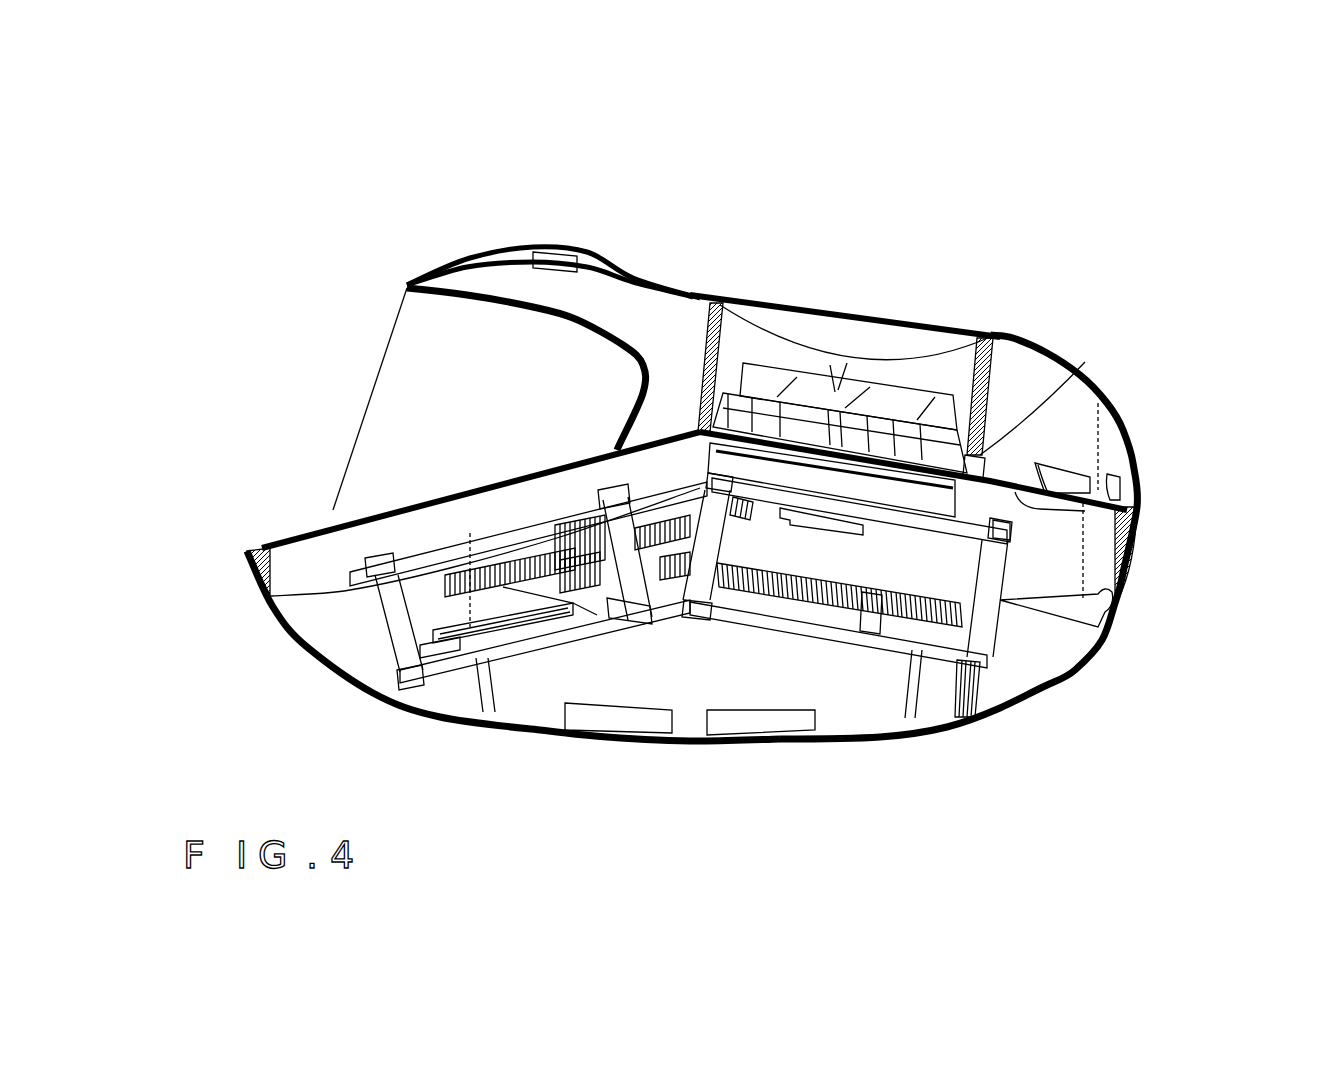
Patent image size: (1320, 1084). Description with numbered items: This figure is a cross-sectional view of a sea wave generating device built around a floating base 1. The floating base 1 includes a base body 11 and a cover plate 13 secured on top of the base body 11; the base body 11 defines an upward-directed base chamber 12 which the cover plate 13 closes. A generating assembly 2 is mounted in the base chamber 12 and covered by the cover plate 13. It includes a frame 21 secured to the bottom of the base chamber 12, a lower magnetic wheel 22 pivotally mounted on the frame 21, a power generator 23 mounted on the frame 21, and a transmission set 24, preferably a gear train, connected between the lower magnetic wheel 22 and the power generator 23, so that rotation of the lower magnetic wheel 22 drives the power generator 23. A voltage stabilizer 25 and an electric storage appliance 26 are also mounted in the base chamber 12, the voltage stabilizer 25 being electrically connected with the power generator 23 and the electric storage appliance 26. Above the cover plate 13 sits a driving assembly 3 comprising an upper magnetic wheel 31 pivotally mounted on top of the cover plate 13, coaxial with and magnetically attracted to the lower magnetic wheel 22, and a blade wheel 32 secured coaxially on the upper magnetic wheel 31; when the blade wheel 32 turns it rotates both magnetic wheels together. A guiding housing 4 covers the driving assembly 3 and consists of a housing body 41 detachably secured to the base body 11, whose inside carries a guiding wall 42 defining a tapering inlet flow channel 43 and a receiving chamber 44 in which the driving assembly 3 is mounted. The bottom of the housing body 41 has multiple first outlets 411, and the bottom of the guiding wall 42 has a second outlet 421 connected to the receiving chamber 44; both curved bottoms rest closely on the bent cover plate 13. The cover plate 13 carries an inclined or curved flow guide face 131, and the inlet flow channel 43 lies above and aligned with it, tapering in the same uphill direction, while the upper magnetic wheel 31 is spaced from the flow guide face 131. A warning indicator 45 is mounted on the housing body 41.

The floating base 1 is at (1108, 776).
The base body 11 is at (1032, 700).
The base chamber 12 is at (1050, 650).
The cover plate 13 is at (1133, 507).
The flow guide face 131 is at (340, 520).
The generating assembly 2 is at (1215, 676).
The frame 21 is at (1000, 537).
The lower magnetic wheel 22 is at (980, 600).
The power generator 23 is at (387, 620).
The transmission set 24 is at (872, 600).
The voltage stabilizer 25 is at (620, 727).
The electric storage appliance 26 is at (767, 728).
The driving assembly 3 is at (1010, 252).
The upper magnetic wheel 31 is at (933, 443).
The blade wheel 32 is at (903, 393).
The guiding housing 4 is at (848, 197).
The housing body 41 is at (833, 315).
The first outlets 411 is at (1122, 487).
The guiding wall 42 is at (718, 305).
The second outlet 421 is at (978, 457).
The inlet flow channel 43 is at (417, 387).
The receiving chamber 44 is at (770, 350).
The warning indicator 45 is at (543, 247).